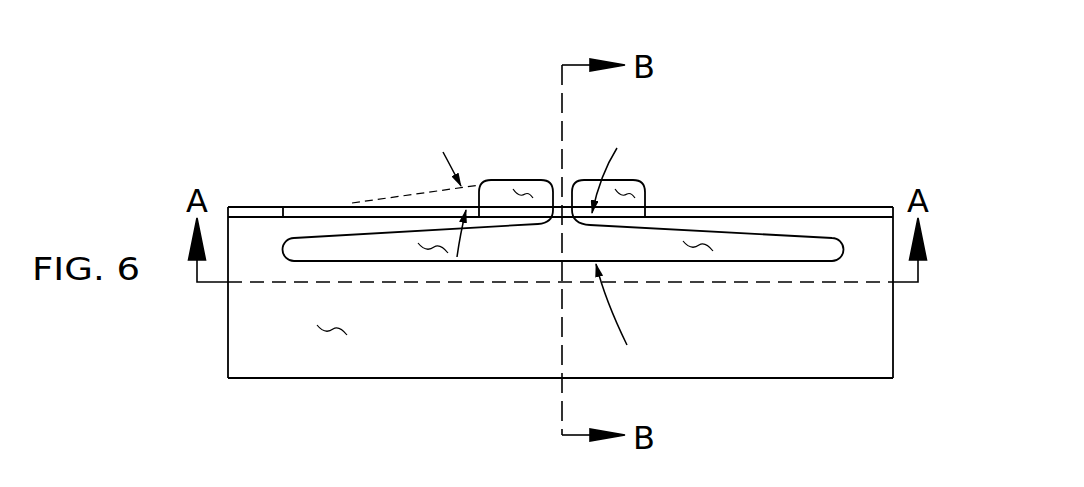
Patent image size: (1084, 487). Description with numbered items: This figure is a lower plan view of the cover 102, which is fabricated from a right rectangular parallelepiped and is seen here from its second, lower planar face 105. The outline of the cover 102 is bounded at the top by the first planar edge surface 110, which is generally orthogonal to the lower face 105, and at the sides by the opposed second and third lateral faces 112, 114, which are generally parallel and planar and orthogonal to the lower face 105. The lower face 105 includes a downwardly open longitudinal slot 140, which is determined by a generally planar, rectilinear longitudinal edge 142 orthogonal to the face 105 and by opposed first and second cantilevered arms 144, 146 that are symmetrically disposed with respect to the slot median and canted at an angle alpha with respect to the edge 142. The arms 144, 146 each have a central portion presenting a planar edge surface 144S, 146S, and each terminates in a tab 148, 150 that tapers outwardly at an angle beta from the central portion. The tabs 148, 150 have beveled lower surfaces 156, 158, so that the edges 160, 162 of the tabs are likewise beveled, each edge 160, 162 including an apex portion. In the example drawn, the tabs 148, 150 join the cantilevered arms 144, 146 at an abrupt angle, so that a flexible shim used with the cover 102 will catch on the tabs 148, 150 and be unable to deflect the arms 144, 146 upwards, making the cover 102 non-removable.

The cover 102 is at (265, 100).
The second (lower) planar face 105 is at (333, 332).
The first (top) planar edge surface 110 is at (715, 378).
The second (left) lateral face 112 is at (228, 340).
The third (right) lateral face 114 is at (893, 330).
The longitudinal slot 140 is at (427, 243).
The longitudinal rectilinear edge 142 is at (473, 258).
The first cantilevered arm 144 is at (366, 204).
The planar edge surface of first arm 144S is at (380, 205).
The second cantilevered arm 146 is at (841, 205).
The planar edge surface of second arm 146S is at (793, 207).
The first tab 148 is at (486, 182).
The second tab 150 is at (588, 178).
The beveled lower surface of first tab 156 is at (523, 190).
The beveled lower surface of second tab 158 is at (632, 183).
The beveled edge of first tab 160 is at (485, 183).
The beveled edge of second tab 162 is at (623, 192).